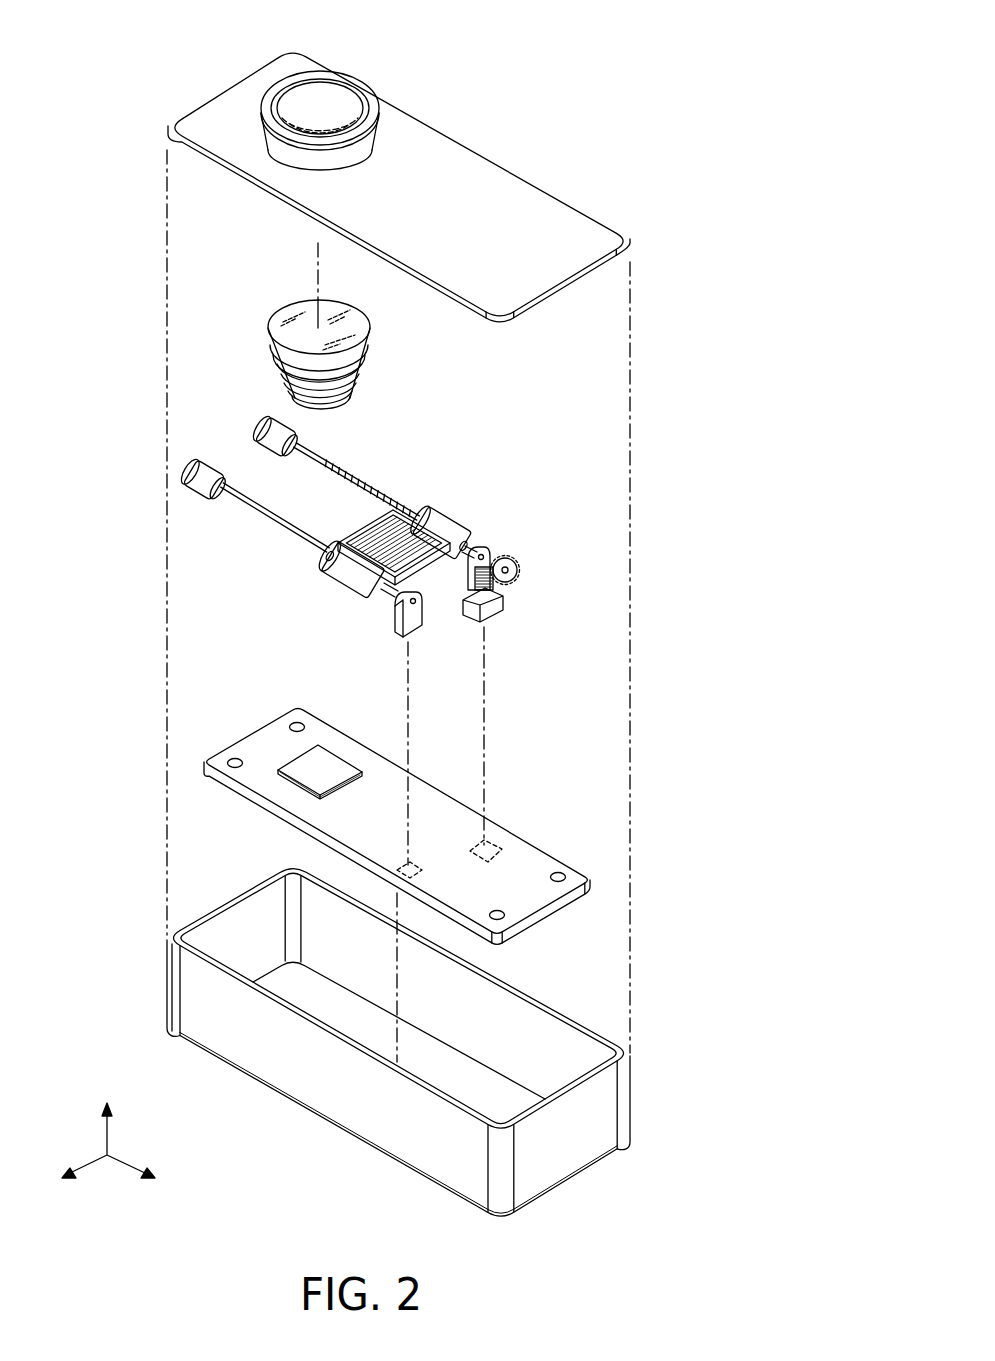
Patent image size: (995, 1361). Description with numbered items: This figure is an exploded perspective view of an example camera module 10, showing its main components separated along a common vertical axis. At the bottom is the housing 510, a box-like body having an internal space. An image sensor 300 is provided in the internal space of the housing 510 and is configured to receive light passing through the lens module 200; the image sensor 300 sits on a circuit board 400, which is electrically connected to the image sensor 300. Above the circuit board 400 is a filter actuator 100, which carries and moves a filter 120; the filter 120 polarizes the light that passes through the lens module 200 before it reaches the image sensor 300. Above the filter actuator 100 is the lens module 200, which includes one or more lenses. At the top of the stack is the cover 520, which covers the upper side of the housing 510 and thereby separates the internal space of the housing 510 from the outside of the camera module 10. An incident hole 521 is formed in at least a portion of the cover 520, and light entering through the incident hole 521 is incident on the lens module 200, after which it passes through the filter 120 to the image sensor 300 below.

The camera module 10 is at (128, 51).
The filter actuator 100 is at (383, 525).
The filter 120 is at (400, 537).
The lens module 200 is at (358, 337).
The image sensor 300 is at (332, 762).
The circuit board 400 is at (525, 857).
The housing 510 is at (573, 1157).
The cover 520 is at (552, 222).
The incident hole 521 is at (320, 97).